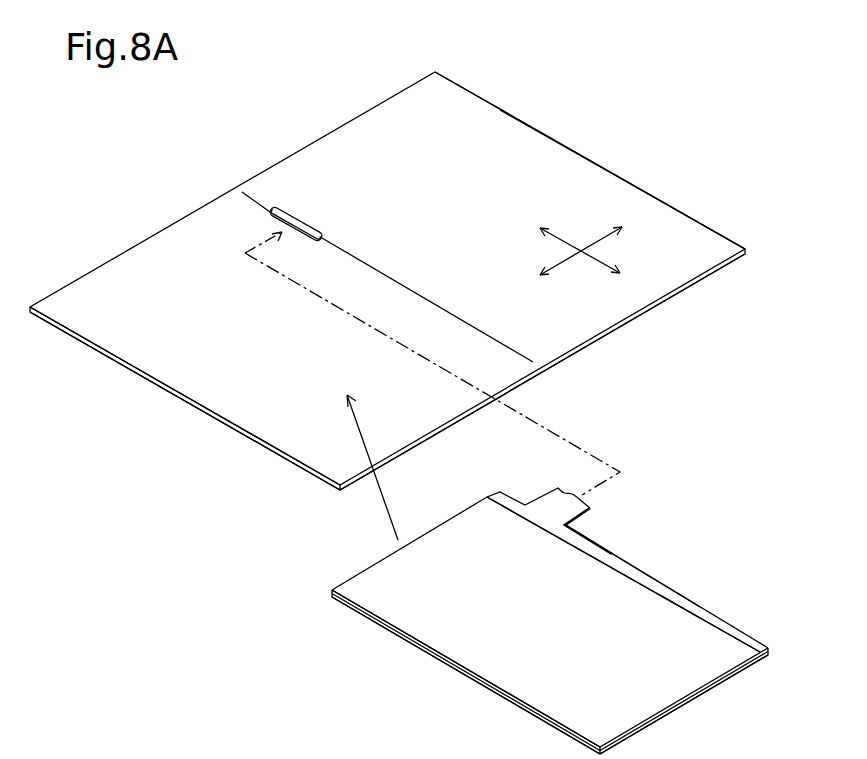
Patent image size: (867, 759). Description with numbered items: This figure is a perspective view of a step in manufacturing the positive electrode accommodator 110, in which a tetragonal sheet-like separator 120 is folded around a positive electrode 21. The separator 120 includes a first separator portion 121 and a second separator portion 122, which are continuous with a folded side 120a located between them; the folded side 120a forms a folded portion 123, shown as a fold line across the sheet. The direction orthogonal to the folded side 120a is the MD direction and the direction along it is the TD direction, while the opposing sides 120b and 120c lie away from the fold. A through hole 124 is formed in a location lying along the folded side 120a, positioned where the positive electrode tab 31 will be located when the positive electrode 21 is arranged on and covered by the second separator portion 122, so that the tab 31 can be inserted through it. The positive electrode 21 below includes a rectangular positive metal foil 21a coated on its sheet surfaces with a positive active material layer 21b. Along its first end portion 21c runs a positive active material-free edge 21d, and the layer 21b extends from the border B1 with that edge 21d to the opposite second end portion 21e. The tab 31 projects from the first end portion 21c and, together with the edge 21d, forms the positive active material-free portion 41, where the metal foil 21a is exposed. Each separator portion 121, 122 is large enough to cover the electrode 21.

The positive electrode accommodator 110 is at (740, 192).
The separator 120 is at (642, 311).
The folded side 120a is at (415, 268).
The folded portion 123 is at (432, 363).
The opposing side 120b is at (544, 133).
The opposing side 120c is at (183, 400).
The first separator portion 121 is at (607, 187).
The second separator portion 122 is at (282, 445).
The through hole 124 is at (300, 227).
The positive electrode 21 is at (700, 690).
The positive metal foil 21a is at (640, 726).
The positive active material layer 21b is at (567, 734).
The first end portion 21c is at (736, 606).
The positive active material-free edge 21d is at (632, 578).
The second end portion 21e is at (466, 675).
The positive electrode tab 31 is at (574, 513).
The positive active material-free portion 41 is at (672, 551).
The border B1 is at (677, 604).